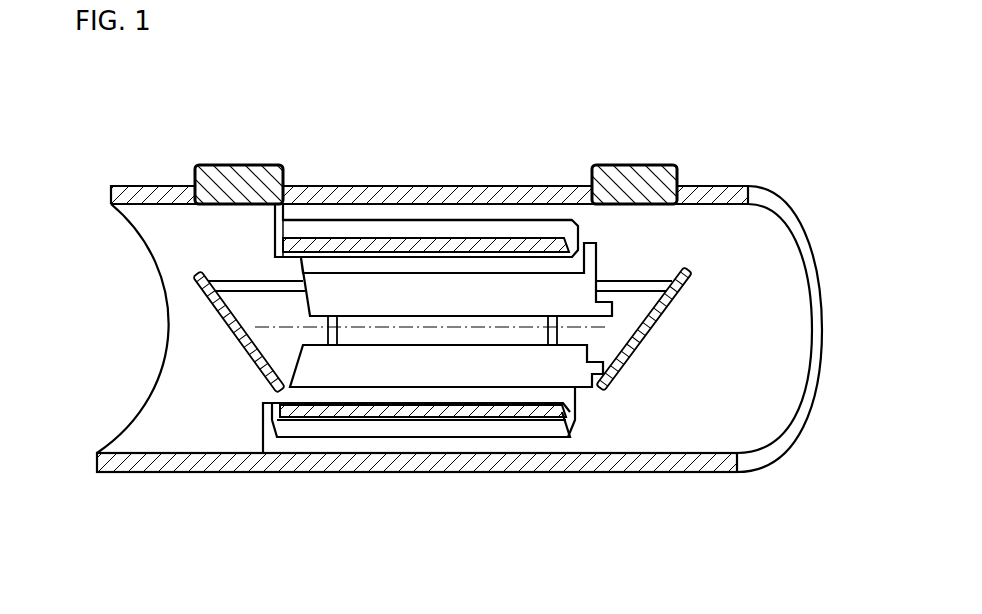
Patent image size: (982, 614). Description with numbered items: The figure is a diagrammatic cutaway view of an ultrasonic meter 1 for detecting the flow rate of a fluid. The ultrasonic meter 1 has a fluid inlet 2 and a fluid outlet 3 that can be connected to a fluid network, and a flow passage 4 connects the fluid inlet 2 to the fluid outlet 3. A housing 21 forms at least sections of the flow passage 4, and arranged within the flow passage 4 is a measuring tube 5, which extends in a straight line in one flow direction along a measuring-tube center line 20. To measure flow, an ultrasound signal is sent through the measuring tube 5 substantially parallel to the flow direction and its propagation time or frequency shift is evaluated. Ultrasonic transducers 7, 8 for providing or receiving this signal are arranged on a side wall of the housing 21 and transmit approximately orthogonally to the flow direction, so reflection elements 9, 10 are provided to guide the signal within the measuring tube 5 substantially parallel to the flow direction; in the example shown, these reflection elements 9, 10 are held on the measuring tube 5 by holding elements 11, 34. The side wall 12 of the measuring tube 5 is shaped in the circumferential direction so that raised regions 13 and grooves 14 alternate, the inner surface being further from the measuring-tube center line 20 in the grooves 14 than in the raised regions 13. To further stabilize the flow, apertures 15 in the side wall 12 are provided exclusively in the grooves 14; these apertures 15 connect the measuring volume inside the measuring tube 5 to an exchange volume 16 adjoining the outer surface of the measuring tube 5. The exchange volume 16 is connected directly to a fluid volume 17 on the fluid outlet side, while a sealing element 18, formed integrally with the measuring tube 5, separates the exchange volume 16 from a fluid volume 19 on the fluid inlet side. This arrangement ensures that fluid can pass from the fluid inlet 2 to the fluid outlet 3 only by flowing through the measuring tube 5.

The ultrasonic meter 1 is at (450, 145).
The fluid inlet 2 is at (132, 371).
The fluid outlet 3 is at (821, 262).
The flow passage 4 is at (386, 343).
The measuring tube 5 is at (392, 222).
The ultrasonic transducer 7 is at (626, 186).
The ultrasonic transducer 8 is at (246, 183).
The reflection element 9 is at (624, 367).
The reflection element 10 is at (240, 350).
The holding element 11 is at (652, 283).
The side wall 12 is at (497, 244).
The raised region 13 is at (528, 290).
The groove 14 is at (490, 337).
The aperture 15 is at (582, 333).
The exchange volume 16 is at (484, 447).
The fluid volume on the fluid outlet side 17 is at (673, 338).
The sealing element 18 is at (290, 212).
The fluid volume on the fluid inlet side 19 is at (167, 415).
The measuring-tube center line 20 is at (446, 325).
The housing 21 is at (137, 185).
The holding element 34 is at (237, 283).